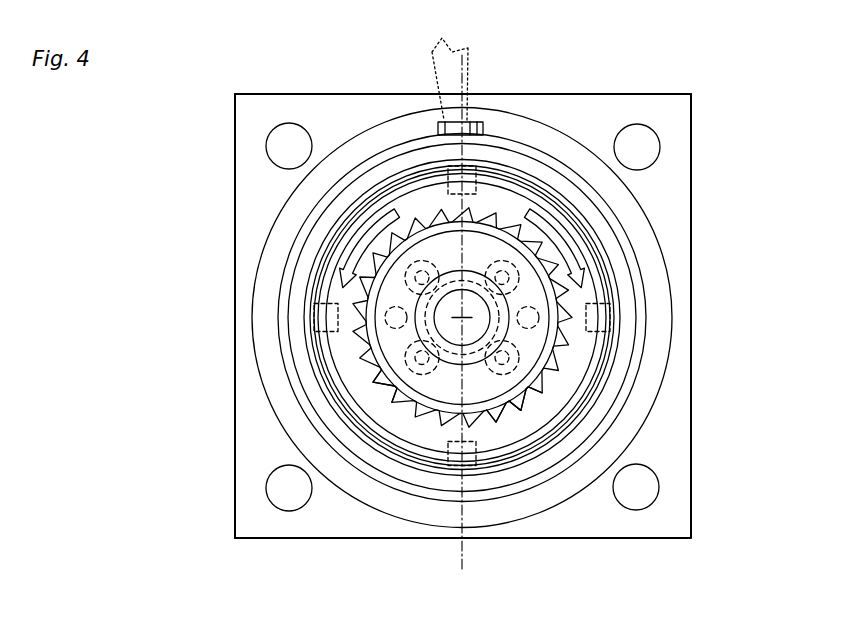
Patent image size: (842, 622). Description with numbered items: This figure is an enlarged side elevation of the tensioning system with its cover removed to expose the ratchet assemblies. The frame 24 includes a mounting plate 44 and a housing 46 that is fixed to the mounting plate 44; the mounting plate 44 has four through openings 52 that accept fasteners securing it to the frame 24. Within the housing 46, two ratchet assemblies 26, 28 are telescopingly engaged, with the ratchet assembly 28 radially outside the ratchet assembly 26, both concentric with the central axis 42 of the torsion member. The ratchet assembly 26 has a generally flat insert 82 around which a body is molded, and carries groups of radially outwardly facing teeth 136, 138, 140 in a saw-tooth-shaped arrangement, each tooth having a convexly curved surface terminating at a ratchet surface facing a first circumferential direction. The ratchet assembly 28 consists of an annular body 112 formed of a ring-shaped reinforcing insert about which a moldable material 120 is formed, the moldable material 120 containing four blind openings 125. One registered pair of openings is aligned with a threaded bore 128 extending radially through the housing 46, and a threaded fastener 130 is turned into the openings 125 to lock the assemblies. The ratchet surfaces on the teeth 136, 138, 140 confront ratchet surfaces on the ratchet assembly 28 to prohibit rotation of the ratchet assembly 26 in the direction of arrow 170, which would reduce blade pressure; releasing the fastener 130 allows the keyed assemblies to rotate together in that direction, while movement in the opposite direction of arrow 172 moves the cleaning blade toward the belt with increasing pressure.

The frame 24 is at (245, 523).
The mounting plate 44 is at (248, 225).
The through openings 52 is at (278, 165).
The housing 46 is at (597, 147).
The annular body 112 is at (582, 178).
The moldable material 120 is at (317, 403).
The ratchet assembly 28 is at (560, 395).
The central axis 42 is at (515, 207).
The tooth 136 is at (540, 370).
The ratchet assembly 26 is at (407, 402).
The tooth 138 is at (533, 390).
The tooth 140 is at (508, 410).
The threaded fastener 130 is at (462, 317).
The insert 82 is at (330, 347).
The threaded bore 128 is at (455, 73).
The blind openings 125 is at (604, 313).
The arrow 170 is at (383, 217).
The arrow 172 is at (580, 275).